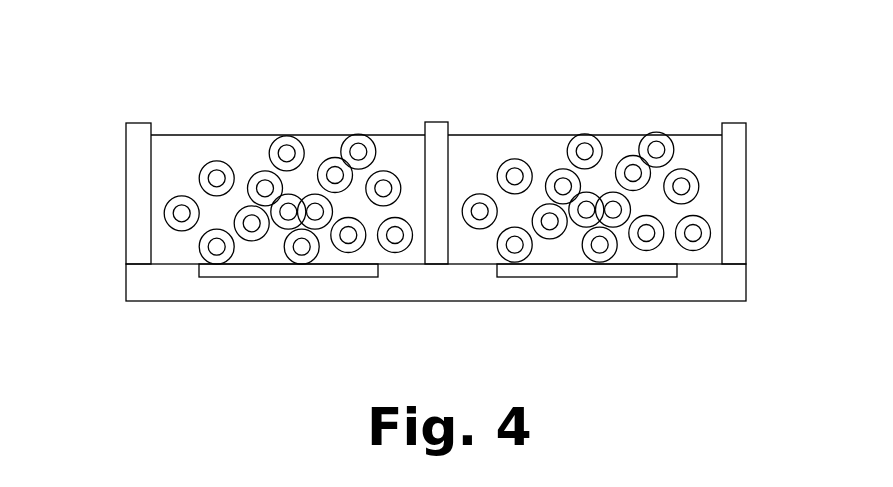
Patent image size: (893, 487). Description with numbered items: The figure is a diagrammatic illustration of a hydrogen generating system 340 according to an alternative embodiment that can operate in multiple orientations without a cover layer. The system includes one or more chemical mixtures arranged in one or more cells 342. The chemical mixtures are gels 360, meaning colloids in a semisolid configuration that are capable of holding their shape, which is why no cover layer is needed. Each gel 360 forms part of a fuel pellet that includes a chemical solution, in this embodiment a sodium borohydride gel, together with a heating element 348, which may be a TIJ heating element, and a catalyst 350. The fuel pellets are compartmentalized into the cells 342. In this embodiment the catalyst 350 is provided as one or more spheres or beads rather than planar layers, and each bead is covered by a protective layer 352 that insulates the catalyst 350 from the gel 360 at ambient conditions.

The hydrogen generating system 340 is at (679, 57).
The cell 342 is at (151, 188).
The heating element 348 is at (199, 270).
The catalyst 350 is at (164, 213).
The protective layer 352 is at (199, 176).
The gel 360 is at (222, 137).